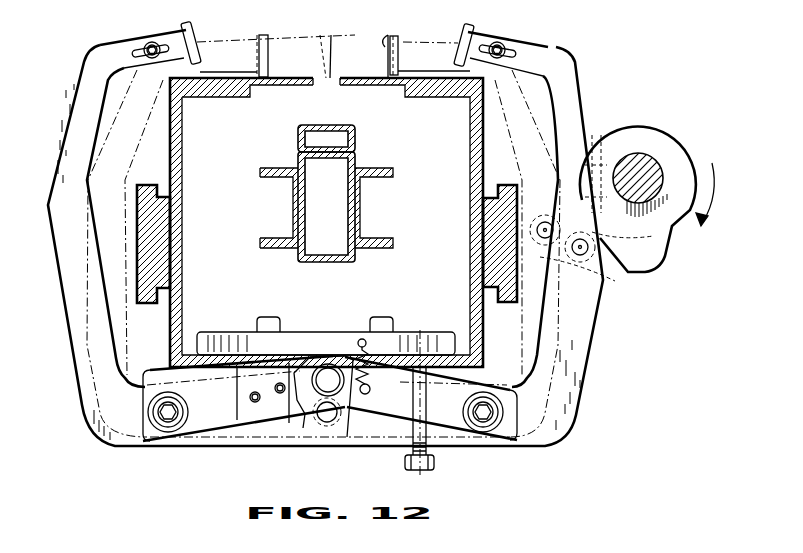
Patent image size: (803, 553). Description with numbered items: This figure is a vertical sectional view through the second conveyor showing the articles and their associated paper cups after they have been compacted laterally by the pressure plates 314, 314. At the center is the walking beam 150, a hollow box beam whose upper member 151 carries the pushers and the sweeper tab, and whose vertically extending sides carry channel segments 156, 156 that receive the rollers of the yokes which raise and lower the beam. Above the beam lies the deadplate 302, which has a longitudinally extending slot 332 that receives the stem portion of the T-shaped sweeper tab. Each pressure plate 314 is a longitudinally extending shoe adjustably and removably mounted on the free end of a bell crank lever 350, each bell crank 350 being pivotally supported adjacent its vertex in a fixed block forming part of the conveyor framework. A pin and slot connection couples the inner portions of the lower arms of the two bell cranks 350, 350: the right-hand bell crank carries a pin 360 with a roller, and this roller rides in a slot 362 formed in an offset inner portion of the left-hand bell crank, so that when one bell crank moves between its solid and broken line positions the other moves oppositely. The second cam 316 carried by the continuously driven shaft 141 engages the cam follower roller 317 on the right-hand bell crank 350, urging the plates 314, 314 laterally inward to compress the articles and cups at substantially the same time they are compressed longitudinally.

The shaft 141 is at (640, 153).
The walking beam 150 is at (302, 263).
The upper member 151 is at (298, 138).
The channel segments 156 is at (280, 177).
The deadplate 302 is at (388, 83).
The pressure plates 314 is at (277, 32).
The second cam 316 is at (687, 145).
The cam follower roller 317 is at (585, 275).
The longitudinally extending slot 332 is at (320, 83).
The bell crank lever 350 is at (118, 115).
The pin 360 is at (347, 437).
The slot 362 is at (310, 428).